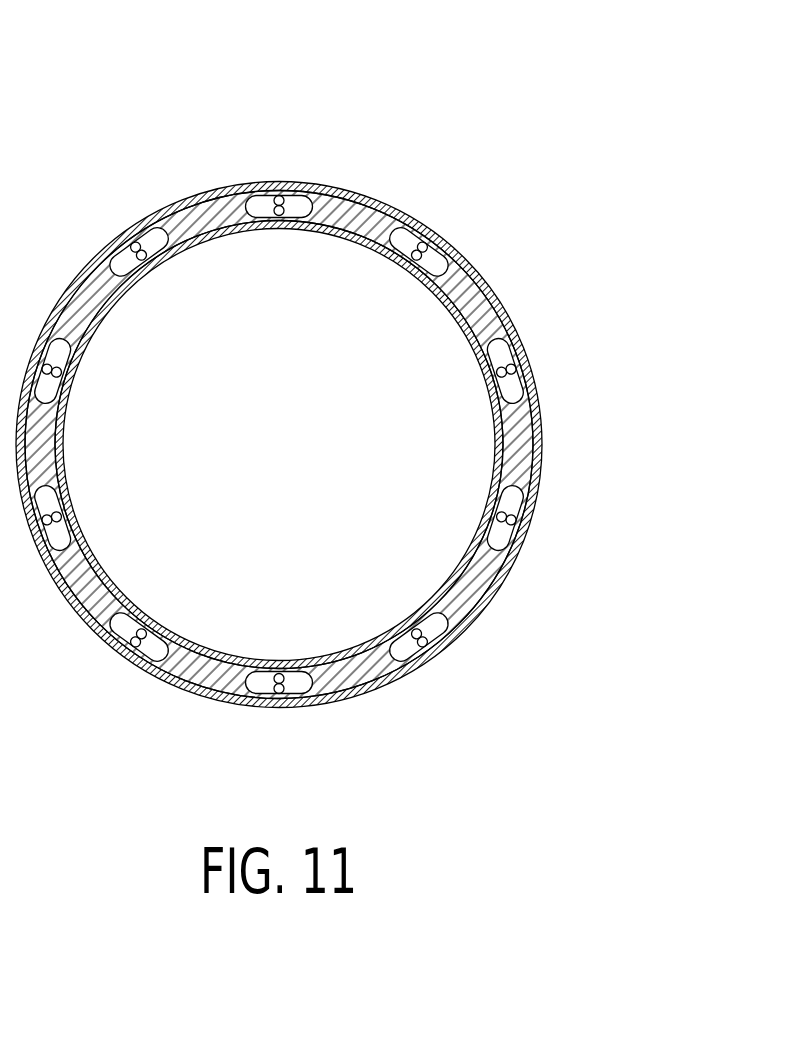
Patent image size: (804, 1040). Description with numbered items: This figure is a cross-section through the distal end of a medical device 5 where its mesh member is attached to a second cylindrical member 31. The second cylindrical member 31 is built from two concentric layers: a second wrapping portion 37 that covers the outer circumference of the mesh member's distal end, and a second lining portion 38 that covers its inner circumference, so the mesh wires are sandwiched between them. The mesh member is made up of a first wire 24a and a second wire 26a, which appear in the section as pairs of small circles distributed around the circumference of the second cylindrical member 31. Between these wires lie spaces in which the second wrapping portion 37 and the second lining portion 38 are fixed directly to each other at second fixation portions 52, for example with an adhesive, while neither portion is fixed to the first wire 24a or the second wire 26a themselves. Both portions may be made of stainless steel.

The medical device 5 is at (296, 86).
The first wire 24a is at (272, 199).
The second wire 26a is at (271, 212).
The second cylindrical member 31 is at (503, 294).
The second wrapping portion 37 is at (357, 190).
The second lining portion 38 is at (318, 232).
The second fixation portion 52 is at (86, 313).